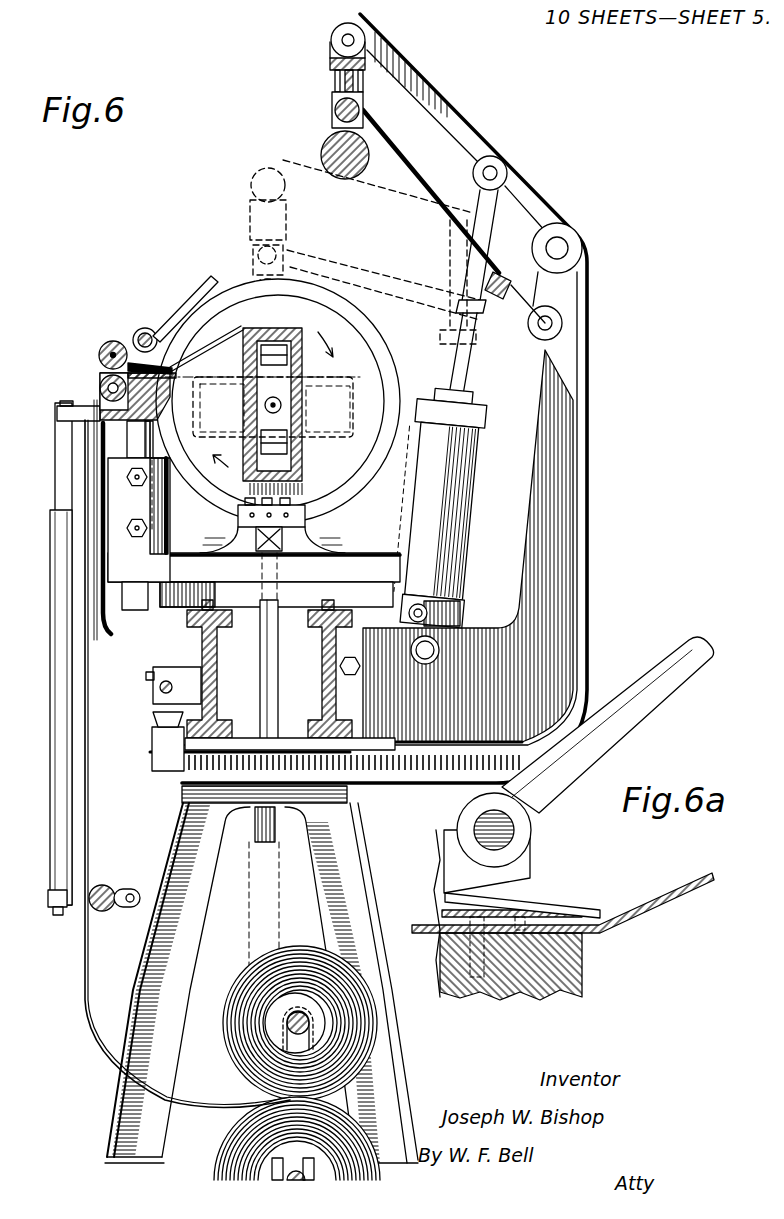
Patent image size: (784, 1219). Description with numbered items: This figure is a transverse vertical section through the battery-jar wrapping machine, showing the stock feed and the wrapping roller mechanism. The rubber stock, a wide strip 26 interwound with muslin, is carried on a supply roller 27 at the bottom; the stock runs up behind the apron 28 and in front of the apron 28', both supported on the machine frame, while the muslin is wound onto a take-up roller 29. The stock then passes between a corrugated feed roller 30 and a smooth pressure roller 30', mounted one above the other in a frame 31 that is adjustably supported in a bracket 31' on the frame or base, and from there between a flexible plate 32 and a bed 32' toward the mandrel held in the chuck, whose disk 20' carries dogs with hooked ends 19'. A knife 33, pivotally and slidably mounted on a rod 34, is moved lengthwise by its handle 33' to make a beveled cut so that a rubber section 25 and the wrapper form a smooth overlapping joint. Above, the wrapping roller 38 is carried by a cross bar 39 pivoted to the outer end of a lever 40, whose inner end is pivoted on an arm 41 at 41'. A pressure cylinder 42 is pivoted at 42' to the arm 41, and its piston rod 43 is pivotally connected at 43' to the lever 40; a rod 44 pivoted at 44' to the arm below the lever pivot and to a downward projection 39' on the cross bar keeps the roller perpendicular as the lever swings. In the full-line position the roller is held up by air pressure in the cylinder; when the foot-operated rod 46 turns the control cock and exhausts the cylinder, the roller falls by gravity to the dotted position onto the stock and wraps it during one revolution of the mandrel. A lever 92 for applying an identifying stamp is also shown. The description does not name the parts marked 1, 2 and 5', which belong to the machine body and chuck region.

In FIG. 6, the frame rails and stand 1 is at (213, 660).
In FIG. 6, the base plate 2 is at (345, 536).
In FIG. 6, the pivot pin 5' is at (295, 412).
In FIG. 6, the hooked ends 19' is at (296, 411).
In FIG. 6, the disk 20' is at (292, 401).
In FIG. 6, the section of rubber 25 is at (318, 333).
In FIG. 6, the wide strip 26 is at (83, 968).
In FIG. 6A, the wide strip 26 is at (645, 905).
In FIG. 6, the supply roller 27 is at (272, 1163).
In FIG. 6, the apron 28 is at (36, 654).
In FIG. 6, the apron 28' is at (58, 520).
In FIG. 6, the take-up roller 29 is at (323, 1012).
In FIG. 6, the corrugated feed roller 30 is at (115, 396).
In FIG. 6, the smooth pressure roller 30' is at (86, 355).
In FIG. 6, the frame 31 is at (59, 414).
In FIG. 6, the bracket 31' is at (86, 515).
In FIG. 6, the flexible plate 32 is at (132, 344).
In FIG. 6A, the flexible plate 32 is at (512, 921).
In FIG. 6, the bed 32' is at (262, 422).
In FIG. 6A, the bed 32' is at (529, 915).
In FIG. 6, the knife 33 is at (185, 350).
In FIG. 6A, the knife 33 is at (528, 894).
In FIG. 6, the handle 33' is at (185, 298).
In FIG. 6A, the handle 33' is at (608, 726).
In FIG. 6, the rod 34 is at (146, 328).
In FIG. 6A, the rod 34 is at (515, 831).
In FIG. 6, the wrapping roller 38 is at (322, 145).
In FIG. 6, the cross bar 39 is at (326, 67).
In FIG. 6, the downward projection 39' is at (370, 113).
In FIG. 6, the lever 40 is at (348, 35).
In FIG. 6, the arm 41 is at (397, 484).
In FIG. 6, the pivot 41' is at (583, 248).
In FIG. 6, the pressure cylinder 42 is at (452, 507).
In FIG. 6, the pivot 42' is at (458, 626).
In FIG. 6, the piston rod 43 is at (480, 292).
In FIG. 6, the pivotal connection 43' is at (525, 172).
In FIG. 6, the rod 44 is at (414, 216).
In FIG. 6, the pivot end 44' is at (583, 306).
In FIG. 6, the rod 46 is at (408, 613).
In FIG. 6, the lever 92 is at (300, 512).